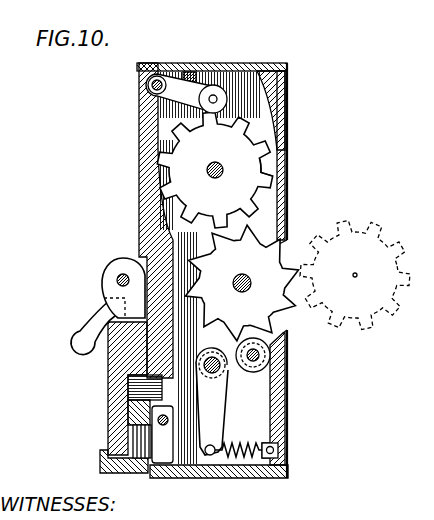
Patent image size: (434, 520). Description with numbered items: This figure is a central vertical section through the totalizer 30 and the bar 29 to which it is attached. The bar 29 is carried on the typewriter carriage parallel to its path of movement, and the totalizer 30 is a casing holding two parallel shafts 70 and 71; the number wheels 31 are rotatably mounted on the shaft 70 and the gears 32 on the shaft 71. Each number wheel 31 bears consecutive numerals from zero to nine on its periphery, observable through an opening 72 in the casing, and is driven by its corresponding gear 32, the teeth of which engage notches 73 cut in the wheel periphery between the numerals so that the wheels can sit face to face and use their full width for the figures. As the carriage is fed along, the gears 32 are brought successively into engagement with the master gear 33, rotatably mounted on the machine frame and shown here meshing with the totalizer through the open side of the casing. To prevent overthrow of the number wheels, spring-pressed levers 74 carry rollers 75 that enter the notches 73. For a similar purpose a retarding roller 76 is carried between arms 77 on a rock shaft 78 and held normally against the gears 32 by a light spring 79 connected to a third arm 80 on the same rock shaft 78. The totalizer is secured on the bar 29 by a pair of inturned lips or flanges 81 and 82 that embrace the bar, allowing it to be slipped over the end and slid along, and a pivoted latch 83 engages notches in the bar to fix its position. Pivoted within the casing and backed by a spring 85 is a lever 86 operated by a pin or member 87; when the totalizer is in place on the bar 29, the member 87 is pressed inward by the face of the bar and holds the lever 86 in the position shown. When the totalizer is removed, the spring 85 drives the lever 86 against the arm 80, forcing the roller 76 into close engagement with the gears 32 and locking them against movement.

The bar 29 is at (114, 369).
The totalizer 30 is at (288, 112).
The number wheels 31 is at (262, 168).
The gears 32 is at (290, 233).
The master gear 33 is at (386, 240).
The shaft 70 is at (208, 168).
The shaft 71 is at (250, 288).
The opening 72 is at (147, 173).
The notches 73 is at (268, 152).
The spring-pressed levers 74 is at (190, 90).
The rollers 75 is at (228, 88).
The retarding roller 76 is at (262, 362).
The arms 77 is at (232, 375).
The rock shaft 78 is at (207, 357).
The light spring 79 is at (252, 466).
The third arm 80 is at (208, 468).
The inturned lip or flange 81 is at (104, 463).
The inturned lip or flange 82 is at (106, 299).
The pivoted latch 83 is at (76, 334).
The spring 85 is at (150, 470).
The lever 86 is at (170, 458).
The pin or member 87 is at (130, 390).